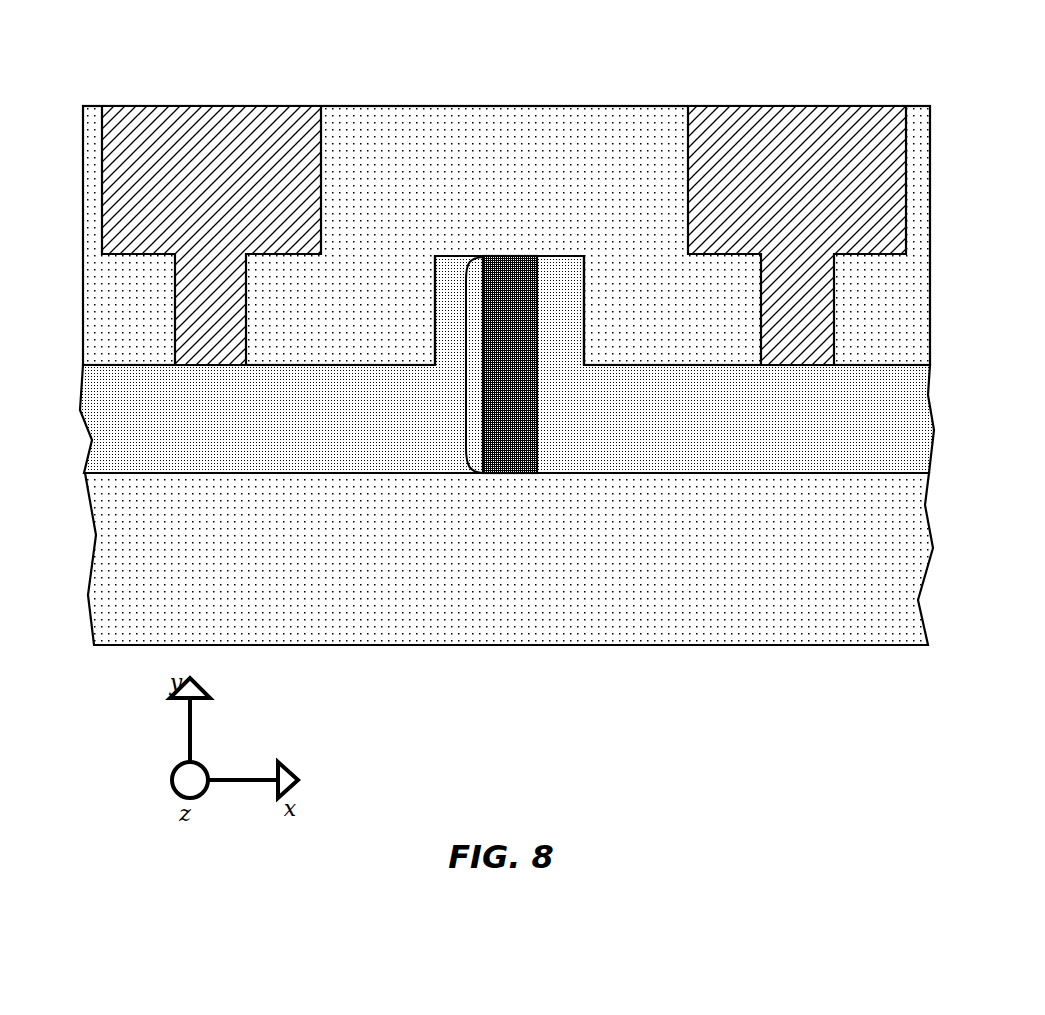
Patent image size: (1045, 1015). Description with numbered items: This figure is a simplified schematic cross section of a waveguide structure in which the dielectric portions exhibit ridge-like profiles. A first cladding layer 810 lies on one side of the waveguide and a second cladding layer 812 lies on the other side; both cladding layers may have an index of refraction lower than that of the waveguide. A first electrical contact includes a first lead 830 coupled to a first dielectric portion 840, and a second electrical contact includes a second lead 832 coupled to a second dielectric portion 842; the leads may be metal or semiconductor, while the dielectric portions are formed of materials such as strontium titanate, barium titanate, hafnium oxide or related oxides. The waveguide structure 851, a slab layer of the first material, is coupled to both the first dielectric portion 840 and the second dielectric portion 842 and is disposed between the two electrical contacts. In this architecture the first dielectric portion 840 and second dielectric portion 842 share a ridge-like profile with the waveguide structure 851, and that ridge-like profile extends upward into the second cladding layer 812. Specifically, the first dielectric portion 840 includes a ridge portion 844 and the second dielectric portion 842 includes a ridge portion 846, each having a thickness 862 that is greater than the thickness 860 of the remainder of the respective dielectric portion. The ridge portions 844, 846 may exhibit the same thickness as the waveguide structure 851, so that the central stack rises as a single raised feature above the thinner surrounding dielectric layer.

The first cladding layer 810 is at (773, 604).
The second cladding layer 812 is at (392, 180).
The first lead 830 is at (193, 105).
The second lead 832 is at (778, 106).
The first dielectric portion 840 is at (286, 363).
The second dielectric portion 842 is at (620, 363).
The ridge portion of the first dielectric portion 844 is at (441, 255).
The ridge portion of the second dielectric portion 846 is at (563, 255).
The waveguide structure 851 is at (500, 255).
The thickness of the remainder of the dielectric portion 860 is at (83, 474).
The thickness of the ridge portion 862 is at (467, 363).